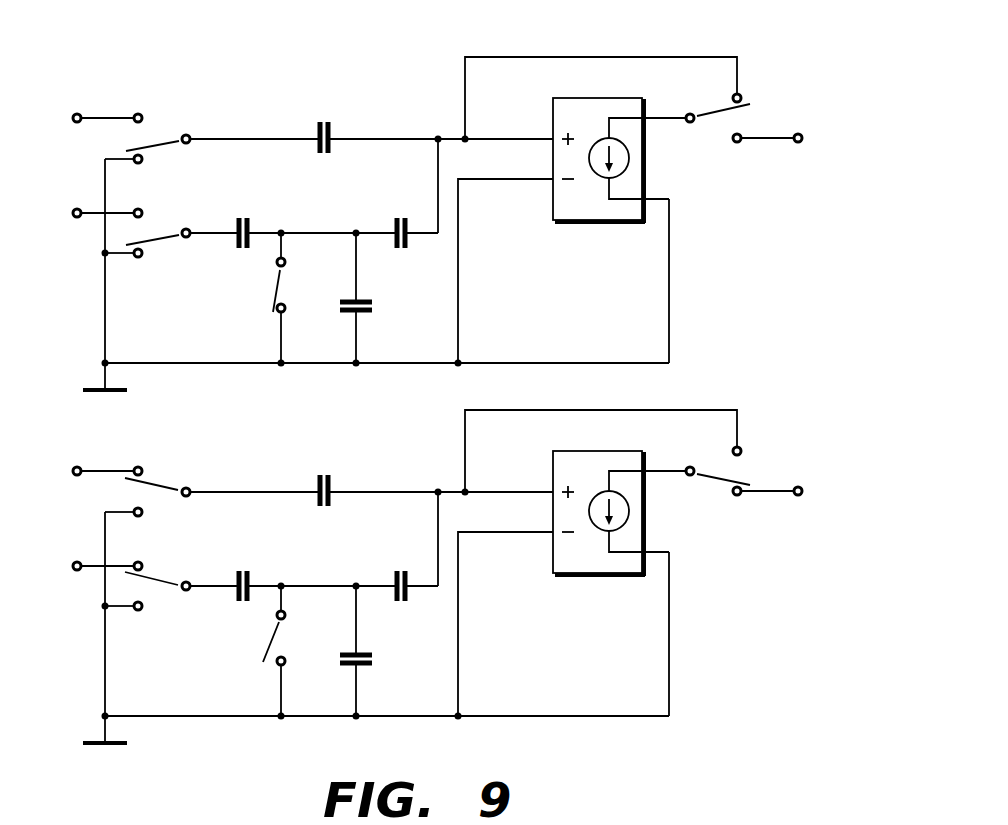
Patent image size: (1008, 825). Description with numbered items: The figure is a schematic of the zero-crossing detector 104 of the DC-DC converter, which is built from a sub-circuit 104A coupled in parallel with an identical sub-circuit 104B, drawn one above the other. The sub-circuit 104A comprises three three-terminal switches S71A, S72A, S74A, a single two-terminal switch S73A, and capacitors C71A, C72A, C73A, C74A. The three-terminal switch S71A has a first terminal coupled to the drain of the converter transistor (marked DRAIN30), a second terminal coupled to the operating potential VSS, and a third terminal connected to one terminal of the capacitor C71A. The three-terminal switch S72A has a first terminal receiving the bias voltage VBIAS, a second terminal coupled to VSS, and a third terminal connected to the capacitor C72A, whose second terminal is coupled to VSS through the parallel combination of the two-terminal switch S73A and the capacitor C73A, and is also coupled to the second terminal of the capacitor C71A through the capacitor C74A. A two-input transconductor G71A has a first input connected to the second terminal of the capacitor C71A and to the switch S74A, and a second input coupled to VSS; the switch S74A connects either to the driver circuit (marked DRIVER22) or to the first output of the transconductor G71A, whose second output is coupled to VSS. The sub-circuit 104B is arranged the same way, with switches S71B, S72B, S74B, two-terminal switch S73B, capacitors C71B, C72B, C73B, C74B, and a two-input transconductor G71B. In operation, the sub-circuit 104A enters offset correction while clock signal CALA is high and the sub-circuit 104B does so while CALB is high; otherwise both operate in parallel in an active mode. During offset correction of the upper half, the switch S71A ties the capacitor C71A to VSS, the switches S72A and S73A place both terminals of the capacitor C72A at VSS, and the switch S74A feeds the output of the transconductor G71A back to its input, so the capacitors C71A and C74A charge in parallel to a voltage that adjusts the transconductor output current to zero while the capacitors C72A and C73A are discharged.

The zero-crossing detector 104 is at (626, 777).
The sub-circuit 104A is at (461, 218).
The sub-circuit 104B is at (461, 571).
The three-terminal switch S71A is at (159, 128).
The three-terminal switch S72A is at (160, 245).
The two-terminal switch S73A is at (283, 285).
The three-terminal switch S74A is at (712, 125).
The capacitor C71A is at (329, 124).
The capacitor C72A is at (240, 216).
The capacitor C73A is at (367, 302).
The capacitor C74A is at (396, 217).
The two-input transconductor G71A is at (678, 182).
The three-terminal switch S71B is at (212, 507).
The three-terminal switch S72B is at (172, 603).
The two-terminal switch S73B is at (304, 651).
The three-terminal switch S74B is at (747, 453).
The capacitor C71B is at (379, 479).
The capacitor C72B is at (284, 574).
The capacitor C73B is at (387, 651).
The capacitor C74B is at (384, 573).
The two-input transconductor G71B is at (612, 494).